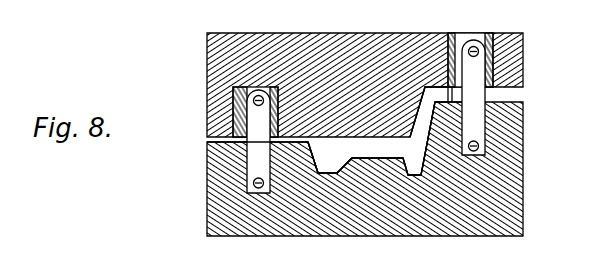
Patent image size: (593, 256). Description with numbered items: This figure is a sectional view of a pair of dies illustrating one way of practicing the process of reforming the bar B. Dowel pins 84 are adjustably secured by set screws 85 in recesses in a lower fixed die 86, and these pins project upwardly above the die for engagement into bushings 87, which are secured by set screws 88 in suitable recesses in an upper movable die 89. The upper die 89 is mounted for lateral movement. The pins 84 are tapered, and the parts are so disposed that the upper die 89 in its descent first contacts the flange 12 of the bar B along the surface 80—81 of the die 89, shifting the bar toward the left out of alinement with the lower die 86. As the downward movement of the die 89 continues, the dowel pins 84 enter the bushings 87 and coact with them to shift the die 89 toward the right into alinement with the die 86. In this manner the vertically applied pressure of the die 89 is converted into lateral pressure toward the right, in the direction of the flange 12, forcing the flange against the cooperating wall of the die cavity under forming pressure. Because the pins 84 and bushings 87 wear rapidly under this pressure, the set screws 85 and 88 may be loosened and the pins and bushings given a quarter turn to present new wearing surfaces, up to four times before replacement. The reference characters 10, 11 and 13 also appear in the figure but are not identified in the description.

The upper movable die 89 is at (381, 27).
The lower fixed die 86 is at (512, 215).
The bushing 87 is at (233, 125).
The dowel pin 84 is at (253, 155).
The set screw 88 is at (250, 99).
The set screw 85 is at (252, 185).
The die surface 80 is at (422, 86).
The die surface 81 is at (428, 122).
The die cavity 10 is at (326, 152).
The lower die portion 11 is at (314, 172).
The flange 12 is at (431, 121).
The lower die portion 13 is at (430, 165).
The bar B is at (379, 148).